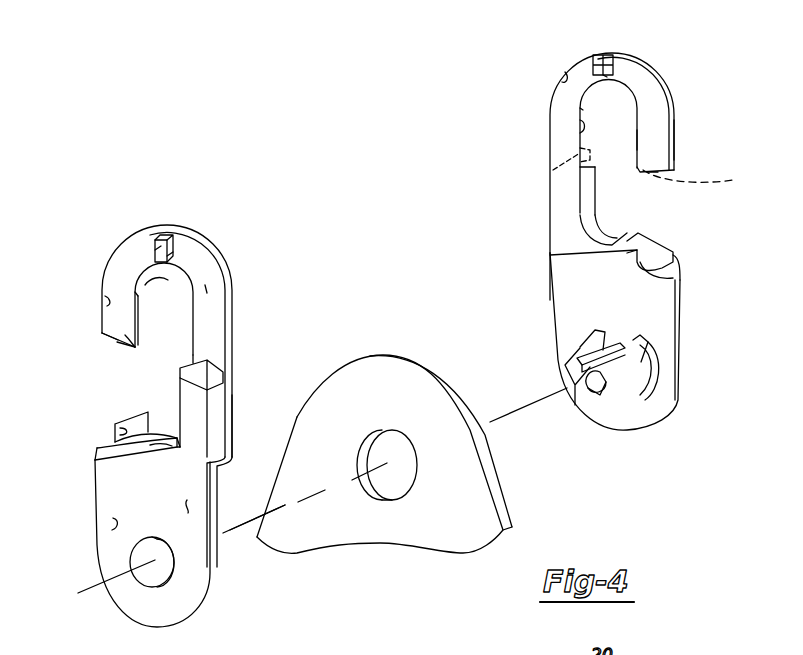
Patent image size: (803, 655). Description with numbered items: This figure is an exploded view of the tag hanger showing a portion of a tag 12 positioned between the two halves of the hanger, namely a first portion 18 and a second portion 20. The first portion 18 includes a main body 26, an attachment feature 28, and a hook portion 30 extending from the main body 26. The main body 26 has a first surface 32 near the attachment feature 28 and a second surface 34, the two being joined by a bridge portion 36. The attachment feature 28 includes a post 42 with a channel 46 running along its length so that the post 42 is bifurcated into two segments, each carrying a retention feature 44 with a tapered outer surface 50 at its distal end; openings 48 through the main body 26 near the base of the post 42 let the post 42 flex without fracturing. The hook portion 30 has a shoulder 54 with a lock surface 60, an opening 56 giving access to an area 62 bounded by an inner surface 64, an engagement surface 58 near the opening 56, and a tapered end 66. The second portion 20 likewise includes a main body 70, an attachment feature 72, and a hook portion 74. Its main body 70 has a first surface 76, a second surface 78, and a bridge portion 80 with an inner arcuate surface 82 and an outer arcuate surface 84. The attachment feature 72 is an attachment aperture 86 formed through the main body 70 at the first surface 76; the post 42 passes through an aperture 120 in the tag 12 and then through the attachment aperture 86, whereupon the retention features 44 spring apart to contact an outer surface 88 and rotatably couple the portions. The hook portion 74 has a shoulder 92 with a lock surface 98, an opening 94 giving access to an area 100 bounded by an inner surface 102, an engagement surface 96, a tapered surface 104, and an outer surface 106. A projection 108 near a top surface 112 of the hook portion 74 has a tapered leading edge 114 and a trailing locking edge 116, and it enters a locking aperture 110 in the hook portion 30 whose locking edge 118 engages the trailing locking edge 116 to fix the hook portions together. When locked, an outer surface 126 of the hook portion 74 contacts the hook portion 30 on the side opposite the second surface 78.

The tag 12 is at (388, 355).
The first portion 18 is at (555, 65).
The second portion 20 is at (138, 222).
The main body 26 is at (570, 318).
The attachment feature 28 is at (625, 385).
The hook portion 30 is at (653, 110).
The first surface 32 is at (585, 298).
The second surface 34 is at (655, 245).
The bridge portion 36 is at (655, 283).
The post 42 is at (635, 348).
The retention feature 44 is at (600, 393).
The channel 46 is at (617, 352).
The openings 48 is at (582, 352).
The tapered outer surface 50 is at (590, 390).
The shoulder 54 is at (585, 195).
The opening 56 is at (655, 175).
The engagement surface 58 is at (700, 180).
The lock surface 60 is at (583, 150).
The area 62 is at (600, 108).
The inner surface 64 is at (580, 126).
The tapered end 66 is at (678, 143).
The main body 70 is at (95, 497).
The attachment feature 72 is at (148, 580).
The hook portion 74 is at (232, 283).
The first surface 76 is at (187, 505).
The second surface 78 is at (122, 414).
The bridge portion 80 is at (110, 438).
The inner arcuate surface 82 is at (158, 440).
The outer arcuate surface 84 is at (97, 455).
The attachment aperture 86 is at (163, 567).
The outer surface 88 is at (113, 525).
The shoulder 92 is at (200, 394).
The opening 94 is at (126, 362).
The engagement surface 96 is at (118, 350).
The lock surface 98 is at (187, 355).
The area 100 is at (168, 283).
The inner surface 102 is at (136, 300).
The tapered surface 104 is at (130, 345).
The outer surface 106 is at (107, 303).
The projection 108 is at (162, 236).
The locking aperture 110 is at (595, 58).
The top surface 112 is at (180, 229).
The tapered leading edge 114 is at (155, 250).
The trailing locking edge 116 is at (172, 258).
The locking edge 118 is at (607, 77).
The aperture 120 is at (393, 480).
The outer surface 126 is at (207, 287).